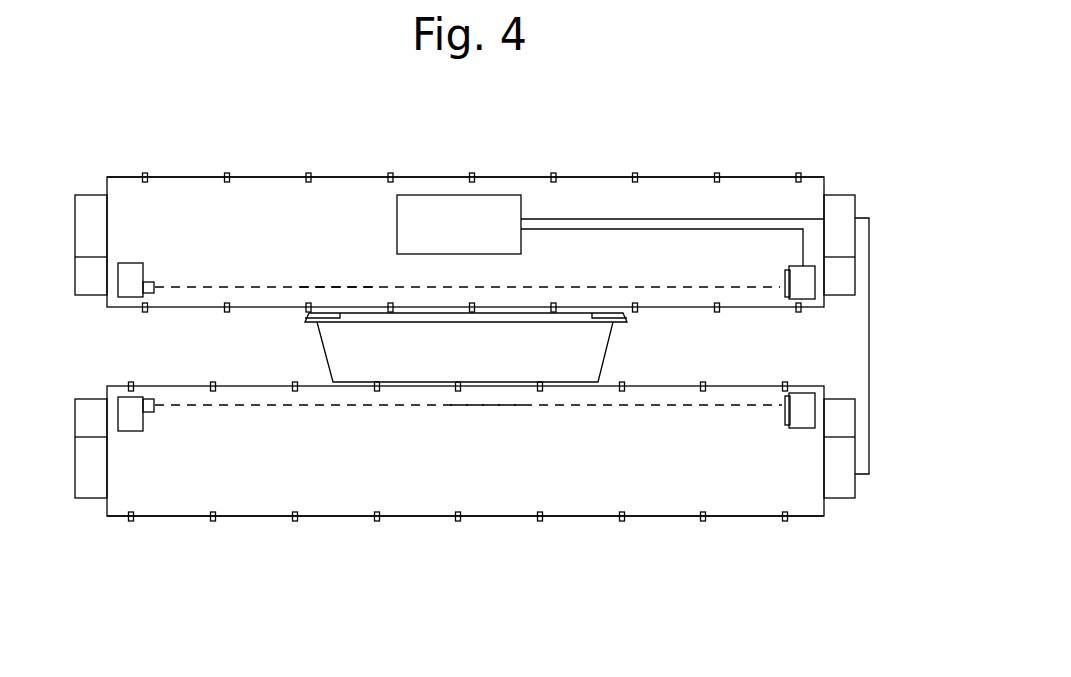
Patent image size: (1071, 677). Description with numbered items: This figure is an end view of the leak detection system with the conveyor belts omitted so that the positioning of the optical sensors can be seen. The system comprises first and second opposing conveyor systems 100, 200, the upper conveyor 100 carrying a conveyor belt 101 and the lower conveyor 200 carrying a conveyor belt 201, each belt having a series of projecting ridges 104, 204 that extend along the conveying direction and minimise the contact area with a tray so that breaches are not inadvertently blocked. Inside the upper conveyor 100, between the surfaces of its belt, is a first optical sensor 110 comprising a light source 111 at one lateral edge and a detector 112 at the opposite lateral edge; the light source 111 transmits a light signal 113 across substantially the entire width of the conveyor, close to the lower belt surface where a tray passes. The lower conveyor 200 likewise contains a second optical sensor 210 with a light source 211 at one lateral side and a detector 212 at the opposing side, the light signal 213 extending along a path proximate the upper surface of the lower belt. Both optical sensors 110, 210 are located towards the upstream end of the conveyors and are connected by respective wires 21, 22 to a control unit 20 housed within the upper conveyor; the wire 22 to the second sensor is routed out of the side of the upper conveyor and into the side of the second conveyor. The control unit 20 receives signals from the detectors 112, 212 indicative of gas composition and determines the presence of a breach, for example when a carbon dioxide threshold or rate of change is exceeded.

The first conveyor system 100 is at (512, 156).
The conveyor belt 101 is at (757, 177).
The projecting ridges 104 is at (227, 177).
The first optical sensor 110 is at (201, 270).
The light source 111 is at (130, 290).
The detector 112 is at (805, 290).
The light signal 113 is at (337, 287).
The control unit 20 is at (437, 195).
The wire 21 is at (653, 219).
The wire 22 is at (687, 226).
The second conveyor system 200 is at (333, 545).
The conveyor belt 201 is at (252, 516).
The projecting ridges 204 is at (622, 516).
The second optical sensor 210 is at (778, 440).
The light source 211 is at (133, 421).
The detector 212 is at (803, 420).
The light signal 213 is at (490, 405).